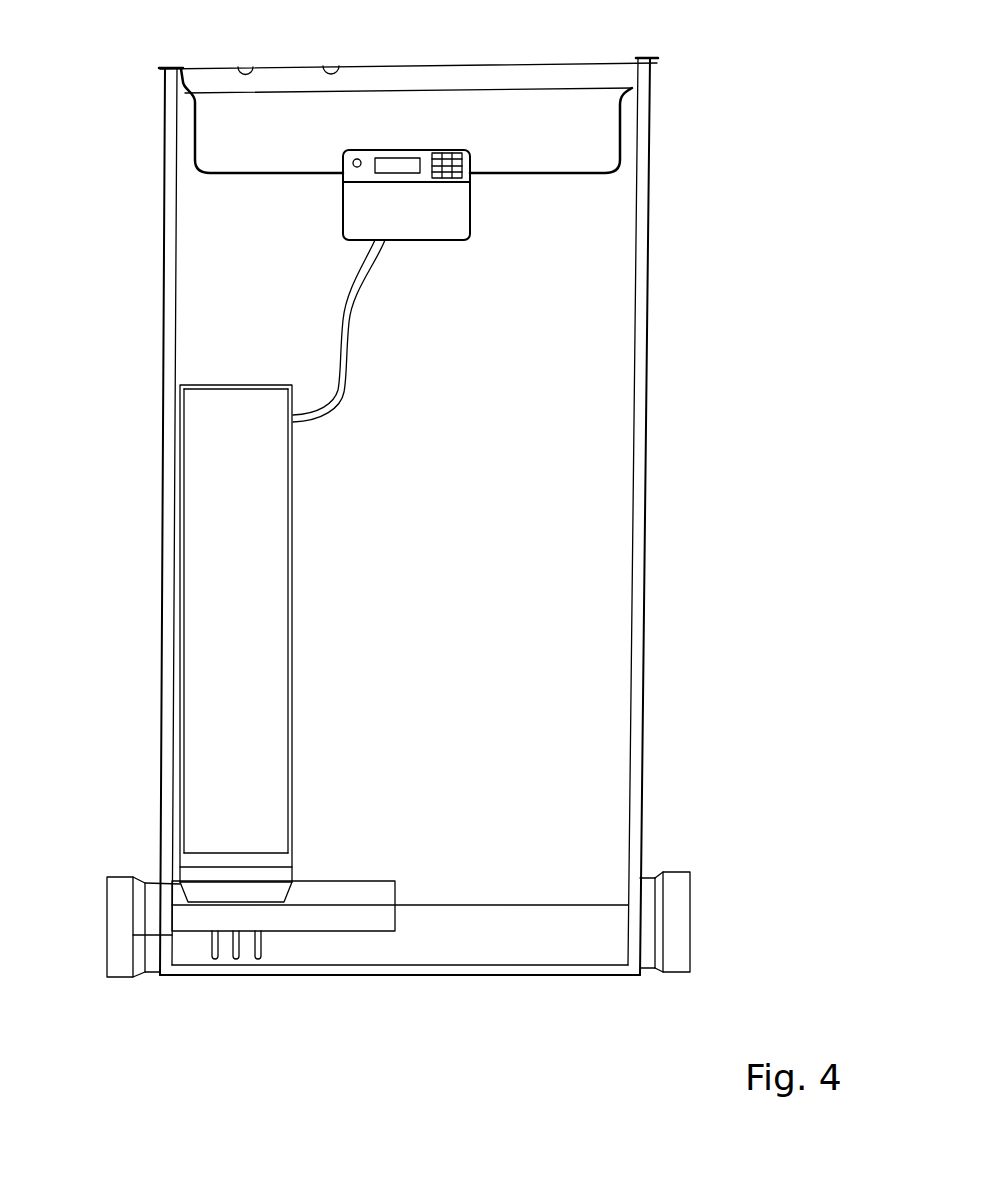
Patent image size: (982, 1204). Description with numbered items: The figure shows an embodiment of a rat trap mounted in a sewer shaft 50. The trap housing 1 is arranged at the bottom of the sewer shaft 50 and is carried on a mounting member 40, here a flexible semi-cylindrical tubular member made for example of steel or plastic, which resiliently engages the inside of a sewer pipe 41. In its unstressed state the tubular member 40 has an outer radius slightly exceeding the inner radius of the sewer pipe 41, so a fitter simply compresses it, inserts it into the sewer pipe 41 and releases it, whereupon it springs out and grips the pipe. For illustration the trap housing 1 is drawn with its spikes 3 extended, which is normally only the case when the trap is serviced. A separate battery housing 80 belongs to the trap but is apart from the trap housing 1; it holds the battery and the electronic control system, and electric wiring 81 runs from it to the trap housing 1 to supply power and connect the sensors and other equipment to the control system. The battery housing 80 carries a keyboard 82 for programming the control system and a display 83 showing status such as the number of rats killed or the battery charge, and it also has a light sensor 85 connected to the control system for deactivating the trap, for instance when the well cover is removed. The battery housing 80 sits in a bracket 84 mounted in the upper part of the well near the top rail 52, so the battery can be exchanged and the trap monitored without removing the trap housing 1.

The trap housing 1 is at (308, 603).
The connector pins 3 is at (240, 940).
The mounting member 40 is at (337, 878).
The sewer pipe 41 is at (112, 885).
The sewer shaft 50 is at (635, 605).
The top rail 52 is at (578, 68).
The battery housing 80 is at (464, 155).
The cable 81 is at (357, 318).
The keyboard 82 is at (452, 150).
The display 83 is at (400, 165).
The bracket 84 is at (620, 172).
The light sensor 85 is at (355, 160).